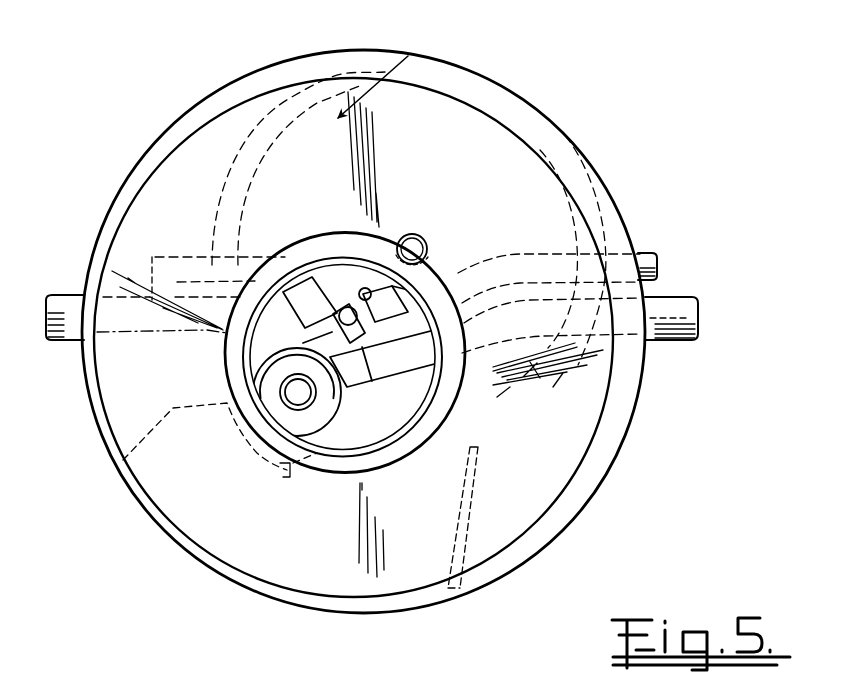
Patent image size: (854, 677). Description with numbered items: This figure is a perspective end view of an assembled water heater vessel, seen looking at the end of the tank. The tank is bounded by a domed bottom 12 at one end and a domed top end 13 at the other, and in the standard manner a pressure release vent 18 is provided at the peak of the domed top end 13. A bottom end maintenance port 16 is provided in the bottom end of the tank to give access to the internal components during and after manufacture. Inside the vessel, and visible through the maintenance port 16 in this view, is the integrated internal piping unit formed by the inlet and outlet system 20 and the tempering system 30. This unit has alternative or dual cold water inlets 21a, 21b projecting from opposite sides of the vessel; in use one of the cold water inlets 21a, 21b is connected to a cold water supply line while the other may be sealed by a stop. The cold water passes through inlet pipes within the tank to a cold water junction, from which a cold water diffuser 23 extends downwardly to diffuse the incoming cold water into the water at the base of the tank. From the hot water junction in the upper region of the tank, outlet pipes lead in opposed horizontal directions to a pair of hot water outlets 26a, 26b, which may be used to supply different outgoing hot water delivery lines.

The domed bottom 12 is at (249, 568).
The domed top end 13 is at (420, 50).
The bottom end maintenance port 16 is at (380, 400).
The pressure release vent 18 is at (549, 136).
The inlet and outlet system 20 is at (414, 388).
The tempering system 30 is at (413, 389).
The cold water inlet 21a is at (63, 341).
The cold water inlet 21b is at (672, 341).
The cold water diffuser 23 is at (112, 476).
The hot water outlet 26a is at (167, 257).
The hot water outlet 26b is at (648, 253).